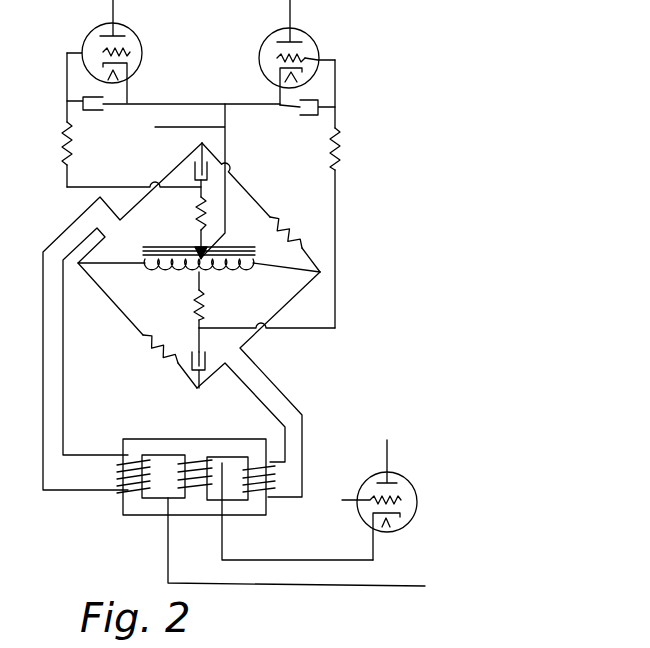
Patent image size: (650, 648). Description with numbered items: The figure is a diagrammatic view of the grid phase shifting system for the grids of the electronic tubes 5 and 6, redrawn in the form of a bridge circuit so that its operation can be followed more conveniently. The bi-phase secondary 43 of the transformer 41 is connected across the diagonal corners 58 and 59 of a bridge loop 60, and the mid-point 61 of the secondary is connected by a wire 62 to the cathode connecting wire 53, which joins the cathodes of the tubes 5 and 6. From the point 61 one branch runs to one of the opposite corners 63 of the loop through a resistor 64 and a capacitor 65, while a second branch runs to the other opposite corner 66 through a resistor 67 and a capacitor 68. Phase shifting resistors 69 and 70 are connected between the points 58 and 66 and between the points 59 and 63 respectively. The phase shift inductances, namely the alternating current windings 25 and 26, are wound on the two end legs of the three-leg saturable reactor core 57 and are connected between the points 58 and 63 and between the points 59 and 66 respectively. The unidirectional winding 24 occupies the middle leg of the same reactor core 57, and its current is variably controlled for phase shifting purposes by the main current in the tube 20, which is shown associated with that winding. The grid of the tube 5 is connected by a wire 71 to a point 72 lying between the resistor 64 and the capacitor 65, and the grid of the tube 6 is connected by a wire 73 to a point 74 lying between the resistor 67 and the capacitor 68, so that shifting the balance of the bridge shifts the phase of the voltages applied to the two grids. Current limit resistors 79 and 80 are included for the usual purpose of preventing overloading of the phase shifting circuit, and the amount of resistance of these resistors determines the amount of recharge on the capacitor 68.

The electronic tube 5 is at (144, 54).
The electronic tube 6 is at (264, 55).
The electronic tube 20 is at (405, 484).
The cathode connecting wire 53 is at (258, 104).
The current limit resistor 79 is at (64, 148).
The current limit resistor 80 is at (338, 150).
The wire 71 is at (107, 186).
The corner of bridge loop 63 is at (200, 143).
The wire 62 is at (229, 145).
The capacitor 65 is at (191, 163).
The point 72 is at (212, 192).
The resistor 64 is at (197, 217).
The mid-point of secondary 61 is at (197, 252).
The transformer 41 is at (235, 254).
The bridge loop 60 is at (255, 195).
The phase shifting resistor 70 is at (296, 230).
The diagonal corner of bridge loop 58 is at (79, 266).
The bi-phase secondary 43 is at (220, 270).
The diagonal corner of bridge loop 59 is at (320, 275).
The wire 73 is at (338, 303).
The resistor 67 is at (204, 305).
The point 74 is at (196, 328).
The phase shifting resistor 69 is at (152, 352).
The capacitor 68 is at (205, 360).
The corner of bridge loop 66 is at (195, 389).
The saturable reactor core 57 is at (244, 510).
The alternating current winding of saturable reactor 25 is at (116, 468).
The unidirectional winding of saturable reactor 24 is at (178, 467).
The alternating current winding of saturable reactor 26 is at (272, 480).